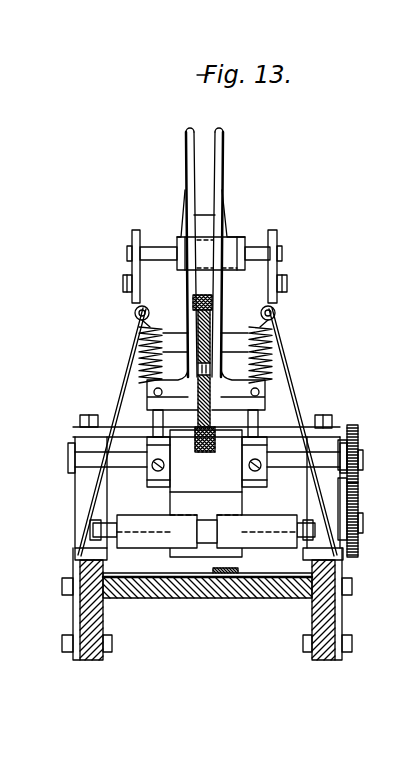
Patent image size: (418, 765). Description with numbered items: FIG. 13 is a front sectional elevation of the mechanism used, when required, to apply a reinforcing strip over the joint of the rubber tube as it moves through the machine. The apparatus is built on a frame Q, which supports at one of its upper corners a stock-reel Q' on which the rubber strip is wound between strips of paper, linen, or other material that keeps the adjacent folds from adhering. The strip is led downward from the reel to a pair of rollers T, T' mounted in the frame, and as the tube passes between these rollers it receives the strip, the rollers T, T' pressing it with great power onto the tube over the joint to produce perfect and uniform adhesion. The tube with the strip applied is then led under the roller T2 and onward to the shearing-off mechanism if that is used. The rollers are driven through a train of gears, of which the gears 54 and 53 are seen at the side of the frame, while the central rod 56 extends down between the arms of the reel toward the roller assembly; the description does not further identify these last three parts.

The stock-reel Q' is at (213, 252).
The frame Q is at (207, 432).
The central rod 56 is at (213, 310).
The gear 54 is at (358, 437).
The gear 53 is at (360, 512).
The roller T is at (206, 461).
The roller T' is at (206, 524).
The roller T2 is at (265, 538).